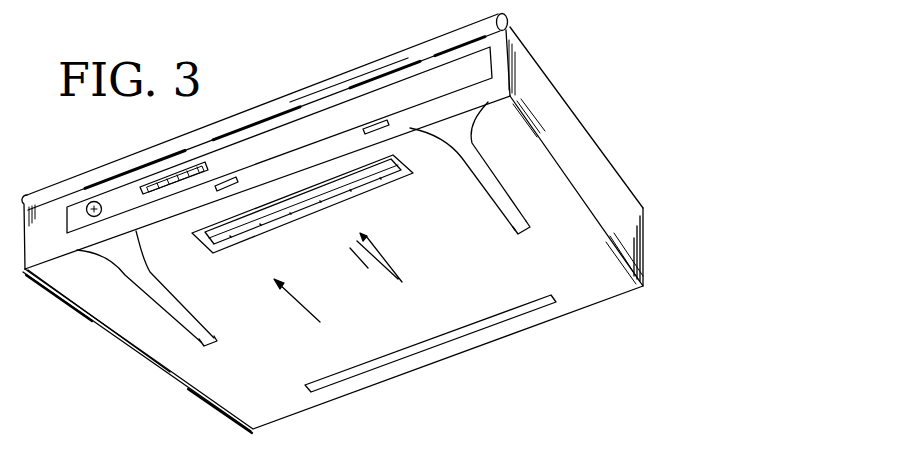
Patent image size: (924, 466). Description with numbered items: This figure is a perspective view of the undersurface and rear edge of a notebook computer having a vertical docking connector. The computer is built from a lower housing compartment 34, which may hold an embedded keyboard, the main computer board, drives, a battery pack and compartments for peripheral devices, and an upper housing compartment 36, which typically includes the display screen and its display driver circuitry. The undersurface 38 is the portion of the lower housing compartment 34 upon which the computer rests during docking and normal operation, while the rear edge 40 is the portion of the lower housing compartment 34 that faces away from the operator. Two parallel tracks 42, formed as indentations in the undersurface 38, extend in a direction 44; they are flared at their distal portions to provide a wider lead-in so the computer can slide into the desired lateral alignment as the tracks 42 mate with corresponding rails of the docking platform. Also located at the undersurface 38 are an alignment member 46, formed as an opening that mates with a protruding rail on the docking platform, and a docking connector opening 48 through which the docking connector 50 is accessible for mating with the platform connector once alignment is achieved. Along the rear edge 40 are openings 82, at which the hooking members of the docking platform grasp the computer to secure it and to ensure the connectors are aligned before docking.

The lower housing compartment 34 is at (646, 243).
The upper housing compartment 36 is at (552, 79).
The undersurface 38 is at (384, 317).
The rear edge 40 is at (61, 246).
The parallel tracks 42 is at (193, 320).
The direction 44 is at (297, 311).
The alignment member 46 is at (464, 327).
The docking connector opening 48 is at (413, 173).
The docking connector 50 is at (382, 182).
The openings 82 is at (232, 178).